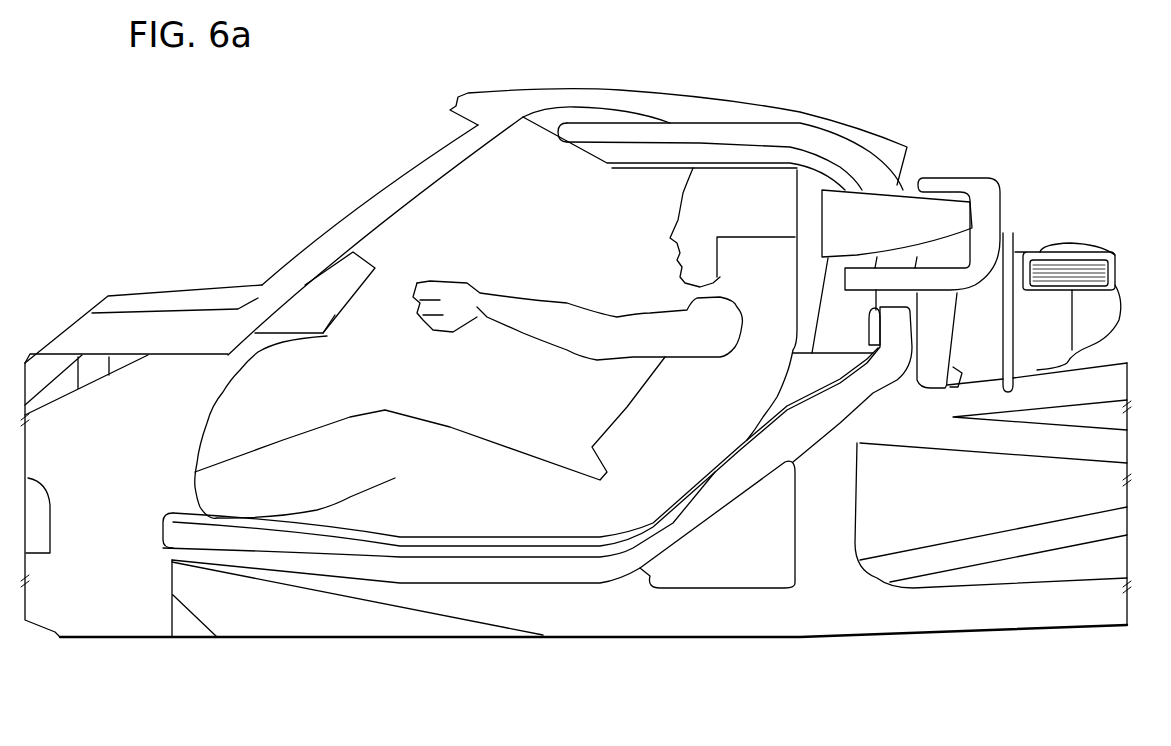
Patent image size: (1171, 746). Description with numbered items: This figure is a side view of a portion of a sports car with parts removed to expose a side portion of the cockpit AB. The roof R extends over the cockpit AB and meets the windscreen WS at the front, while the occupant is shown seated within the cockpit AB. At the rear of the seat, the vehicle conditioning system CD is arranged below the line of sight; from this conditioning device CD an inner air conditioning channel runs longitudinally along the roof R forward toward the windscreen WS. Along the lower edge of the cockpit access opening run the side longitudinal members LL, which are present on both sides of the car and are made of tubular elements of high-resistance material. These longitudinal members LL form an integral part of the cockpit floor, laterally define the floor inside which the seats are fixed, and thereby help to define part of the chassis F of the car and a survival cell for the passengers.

The windscreen WS is at (374, 190).
The pillar PL is at (301, 315).
The cockpit AB is at (445, 243).
The roof R is at (687, 97).
The vehicle conditioning system CD is at (998, 174).
The side longitudinal members LL is at (478, 577).
The chassis F is at (682, 609).